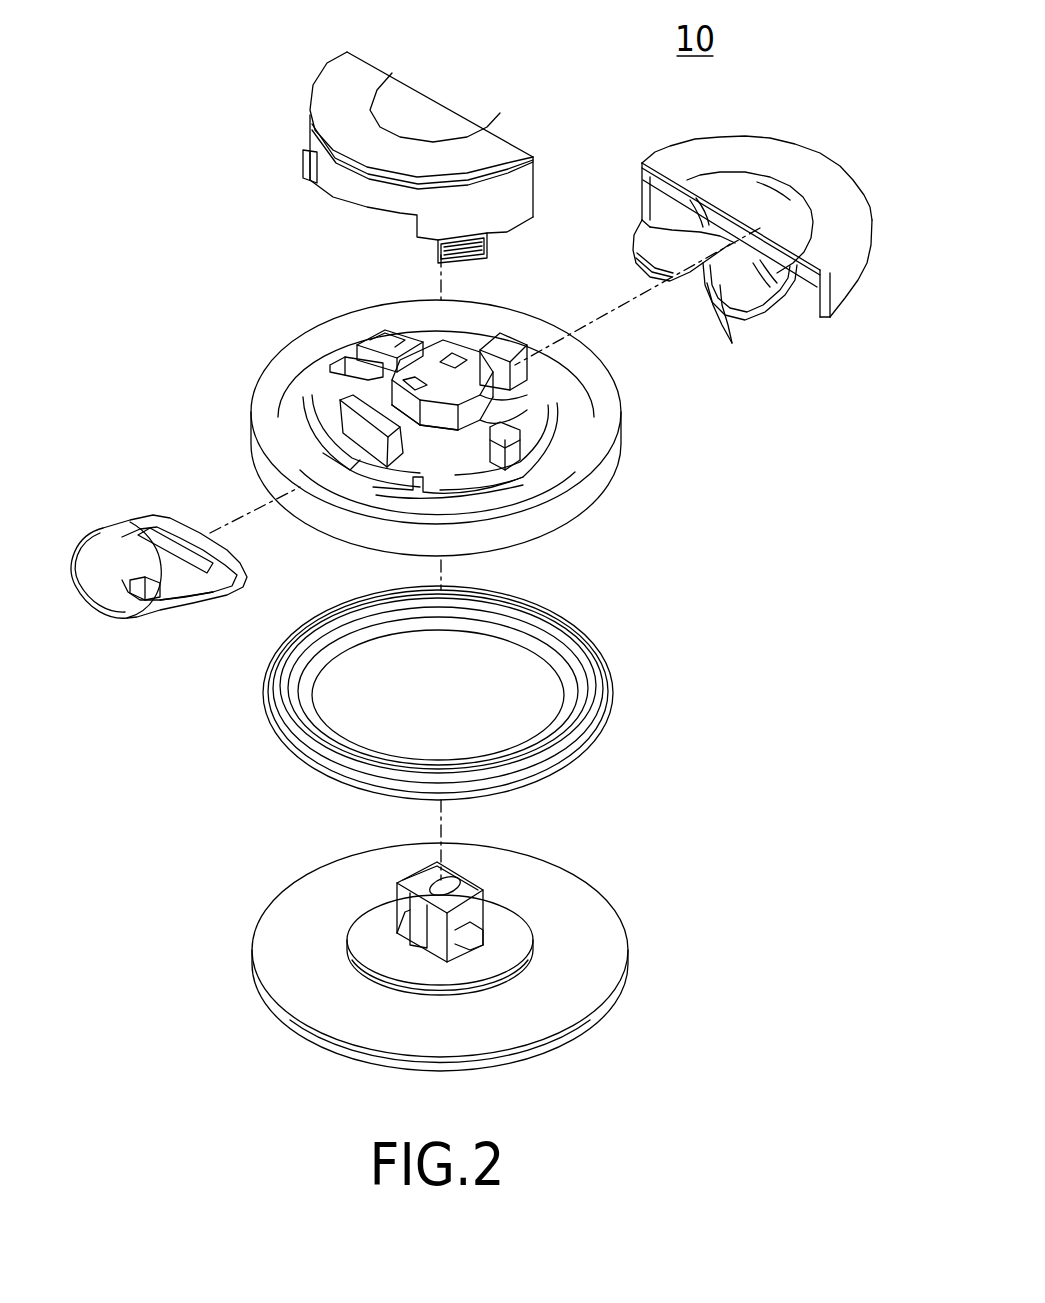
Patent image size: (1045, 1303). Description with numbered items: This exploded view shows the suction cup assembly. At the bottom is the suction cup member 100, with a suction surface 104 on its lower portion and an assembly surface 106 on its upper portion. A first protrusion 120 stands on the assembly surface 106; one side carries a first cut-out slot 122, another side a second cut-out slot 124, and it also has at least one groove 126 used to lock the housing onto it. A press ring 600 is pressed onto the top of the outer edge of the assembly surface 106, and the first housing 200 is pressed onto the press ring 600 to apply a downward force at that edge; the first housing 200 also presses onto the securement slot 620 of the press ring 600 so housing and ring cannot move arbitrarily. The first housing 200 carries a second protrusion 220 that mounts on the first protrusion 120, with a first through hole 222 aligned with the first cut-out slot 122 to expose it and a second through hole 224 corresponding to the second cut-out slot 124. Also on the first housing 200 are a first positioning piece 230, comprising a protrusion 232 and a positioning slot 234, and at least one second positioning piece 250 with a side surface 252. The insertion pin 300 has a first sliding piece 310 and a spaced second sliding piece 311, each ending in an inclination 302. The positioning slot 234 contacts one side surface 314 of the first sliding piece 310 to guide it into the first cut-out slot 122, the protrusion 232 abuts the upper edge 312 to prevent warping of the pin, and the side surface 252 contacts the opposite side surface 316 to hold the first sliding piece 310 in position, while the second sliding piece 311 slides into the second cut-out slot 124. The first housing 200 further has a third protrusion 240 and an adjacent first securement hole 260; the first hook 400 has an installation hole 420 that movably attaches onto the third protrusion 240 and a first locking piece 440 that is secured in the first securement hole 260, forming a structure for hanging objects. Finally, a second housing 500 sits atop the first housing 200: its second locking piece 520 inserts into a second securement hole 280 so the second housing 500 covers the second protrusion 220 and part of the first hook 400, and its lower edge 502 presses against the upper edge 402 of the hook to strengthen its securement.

The suction cup member 100 is at (600, 960).
The suction surface 104 is at (292, 1025).
The assembly surface 106 is at (279, 928).
The first protrusion 120 is at (467, 880).
The first cut-out slot 122 is at (565, 930).
The second cut-out slot 124 is at (397, 927).
The groove 126 is at (398, 932).
The first housing 200 is at (618, 462).
The second protrusion 220 is at (458, 343).
The first through hole 222 is at (483, 417).
The second through hole 224 is at (347, 360).
The first positioning piece 230 is at (457, 352).
The protrusion 232 is at (527, 373).
The positioning slot 234 is at (520, 390).
The third protrusion 240 is at (343, 417).
The second positioning piece 250 is at (380, 340).
The side surface 252 is at (385, 333).
The first securement hole 260 is at (317, 447).
The second securement hole 280 is at (470, 490).
The insertion pin 300 is at (753, 157).
The inclination 302 is at (640, 256).
The first sliding piece 310 is at (660, 230).
The second sliding piece 311 is at (747, 217).
The upper edge 312 is at (757, 287).
The side surface 314 is at (735, 333).
The side surface 316 is at (782, 298).
The first hook 400 is at (127, 525).
The upper edge 402 is at (173, 577).
The installation hole 420 is at (225, 560).
The first locking piece 440 is at (147, 603).
The second housing 500 is at (320, 100).
The lower edge 502 is at (310, 175).
The second locking piece 520 is at (420, 234).
The press ring 600 is at (598, 683).
The securement slot 620 is at (600, 693).